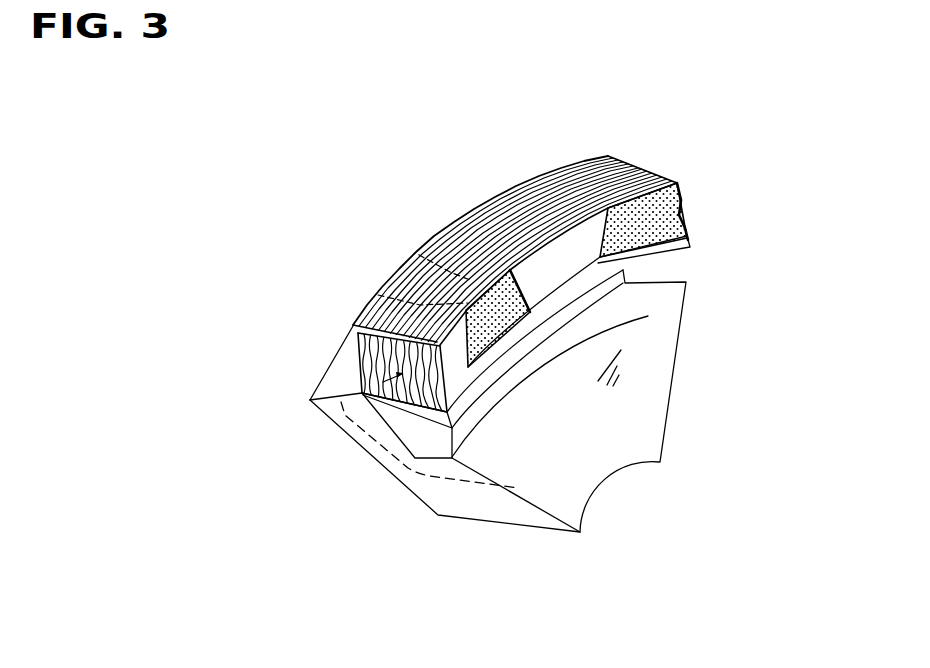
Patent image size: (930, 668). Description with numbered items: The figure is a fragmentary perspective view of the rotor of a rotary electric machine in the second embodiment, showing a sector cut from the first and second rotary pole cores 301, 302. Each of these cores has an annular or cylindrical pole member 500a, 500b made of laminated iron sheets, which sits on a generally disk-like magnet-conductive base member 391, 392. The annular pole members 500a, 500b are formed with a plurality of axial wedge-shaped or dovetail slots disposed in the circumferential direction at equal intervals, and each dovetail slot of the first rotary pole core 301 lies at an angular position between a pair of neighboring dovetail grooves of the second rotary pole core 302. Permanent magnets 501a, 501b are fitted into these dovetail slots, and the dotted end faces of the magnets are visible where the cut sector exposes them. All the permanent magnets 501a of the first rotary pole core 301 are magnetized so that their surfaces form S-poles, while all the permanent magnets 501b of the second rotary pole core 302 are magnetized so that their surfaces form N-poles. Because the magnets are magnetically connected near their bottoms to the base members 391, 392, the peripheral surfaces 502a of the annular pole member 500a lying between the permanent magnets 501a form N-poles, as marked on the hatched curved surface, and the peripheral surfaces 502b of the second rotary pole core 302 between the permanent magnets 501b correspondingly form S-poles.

The first rotary pole core 301 is at (578, 367).
The second rotary pole core 302 is at (692, 265).
The base member 391 is at (588, 346).
The base member 392 is at (648, 316).
The annular pole member 500a is at (601, 270).
The annular pole member 500b is at (692, 193).
The permanent magnet 501a is at (648, 275).
The permanent magnet 501b is at (507, 317).
The peripheral surface 502a is at (498, 251).
The peripheral surface 502b is at (453, 221).